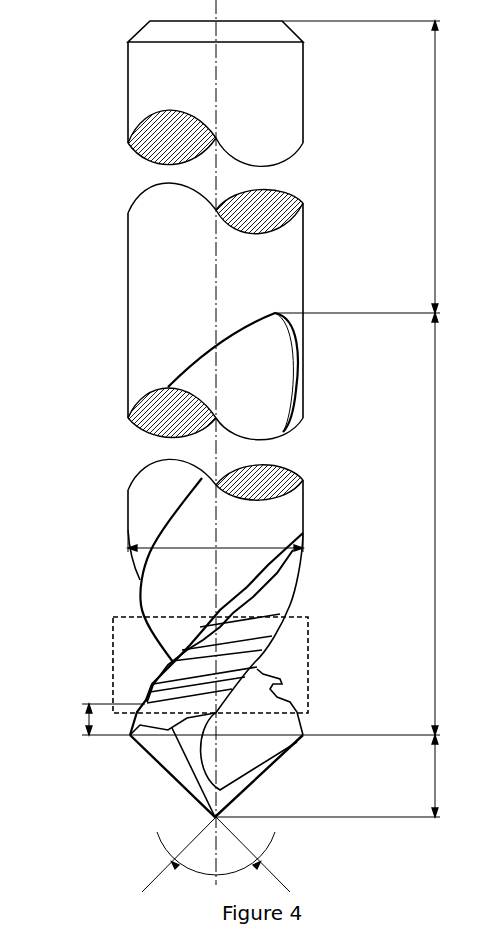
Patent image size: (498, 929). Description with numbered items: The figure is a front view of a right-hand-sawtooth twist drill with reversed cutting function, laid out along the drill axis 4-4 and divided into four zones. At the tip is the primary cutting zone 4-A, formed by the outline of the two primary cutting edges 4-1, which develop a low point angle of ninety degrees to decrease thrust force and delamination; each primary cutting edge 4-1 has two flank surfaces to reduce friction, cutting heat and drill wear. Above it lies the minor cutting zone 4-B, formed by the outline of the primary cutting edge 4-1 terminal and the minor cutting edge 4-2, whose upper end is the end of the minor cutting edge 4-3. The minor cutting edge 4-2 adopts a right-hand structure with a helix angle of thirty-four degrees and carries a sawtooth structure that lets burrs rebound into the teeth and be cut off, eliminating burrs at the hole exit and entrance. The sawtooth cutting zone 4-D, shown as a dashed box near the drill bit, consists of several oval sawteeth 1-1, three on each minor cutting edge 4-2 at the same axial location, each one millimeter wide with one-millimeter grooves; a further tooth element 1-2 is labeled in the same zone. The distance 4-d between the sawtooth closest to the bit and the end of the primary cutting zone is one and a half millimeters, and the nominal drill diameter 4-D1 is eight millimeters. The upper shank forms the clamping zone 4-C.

The drill axis 4-4 is at (216, 77).
The end of the minor cutting edge 4-3 is at (287, 317).
The minor cutting edge 4-2 is at (268, 565).
The primary cutting edge 4-1 is at (260, 777).
The sawtooth cutting zone 4-D is at (309, 632).
The sawteeth 1-1 is at (247, 667).
The second step cutting edge 1-2 is at (233, 680).
The clamping zone 4-C is at (371, 167).
The minor cutting zone 4-B is at (274, 524).
The primary cutting zone 4-A is at (341, 776).
The distance between the sawteeth closest to the drill bit and the end of primary cu 4-d is at (100, 720).
The nominal diameter of the drill 4-D1 is at (215, 535).